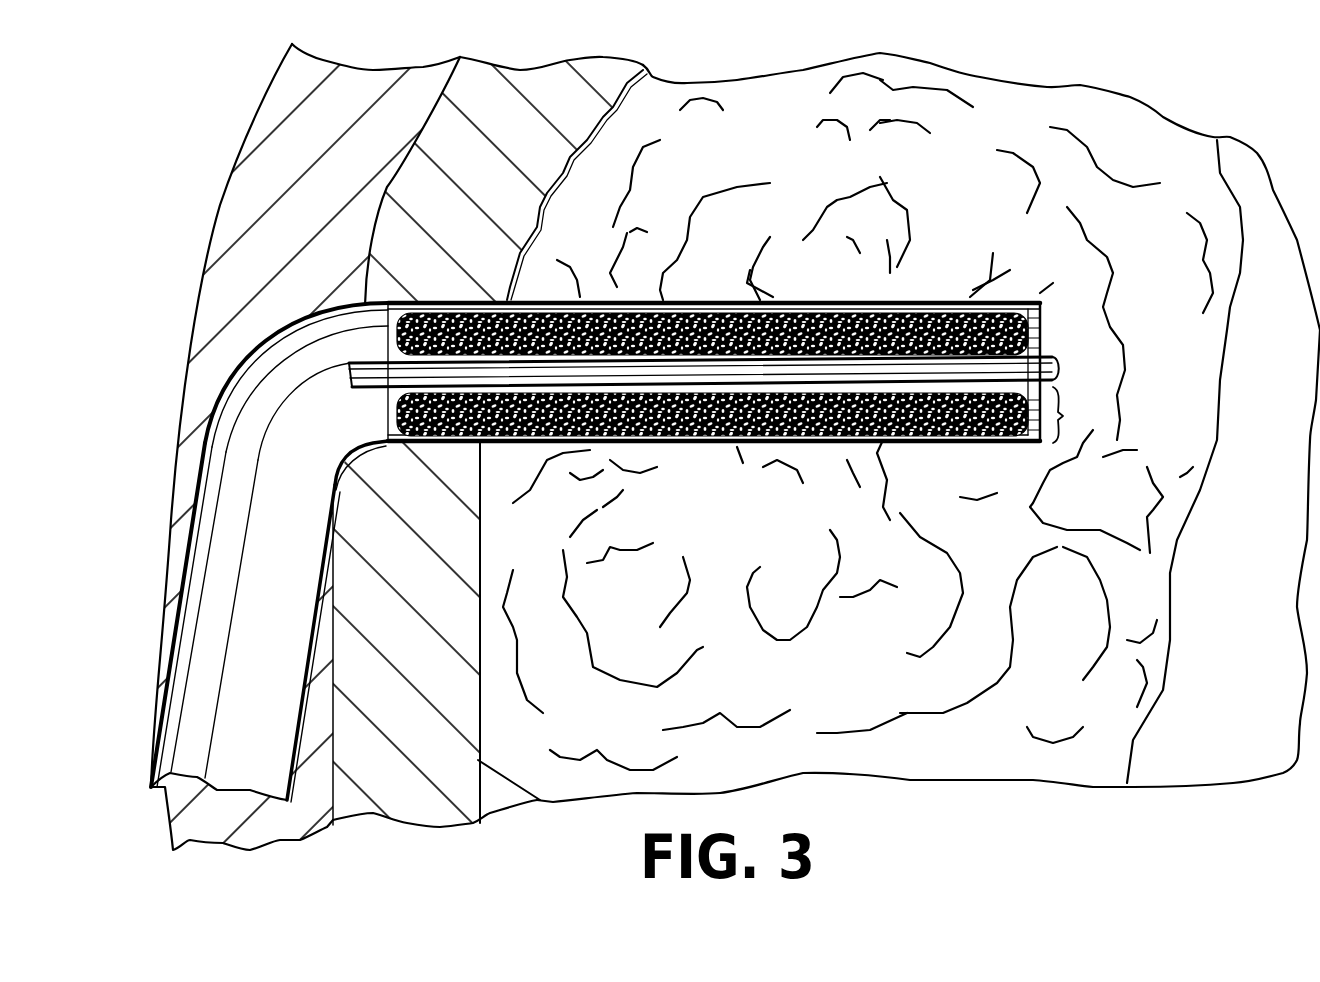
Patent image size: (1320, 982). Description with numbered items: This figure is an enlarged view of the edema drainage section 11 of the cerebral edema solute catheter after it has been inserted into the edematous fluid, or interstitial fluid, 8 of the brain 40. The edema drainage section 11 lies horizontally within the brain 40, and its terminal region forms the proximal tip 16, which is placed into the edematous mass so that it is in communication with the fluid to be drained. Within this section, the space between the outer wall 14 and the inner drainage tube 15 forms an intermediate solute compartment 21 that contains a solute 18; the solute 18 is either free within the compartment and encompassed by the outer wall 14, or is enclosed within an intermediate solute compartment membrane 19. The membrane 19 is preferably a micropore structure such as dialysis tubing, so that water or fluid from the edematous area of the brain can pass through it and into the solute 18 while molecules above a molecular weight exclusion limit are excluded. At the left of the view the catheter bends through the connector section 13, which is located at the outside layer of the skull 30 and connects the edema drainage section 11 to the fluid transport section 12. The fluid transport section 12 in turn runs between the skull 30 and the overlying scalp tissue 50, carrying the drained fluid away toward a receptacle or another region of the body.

The edematous fluid 8 is at (1152, 157).
The edema drainage section 11 is at (690, 452).
The fluid transport section 12 is at (300, 733).
The connector section 13 is at (268, 341).
The outer wall 14 is at (913, 446).
The inner drainage tube 15 is at (373, 386).
The proximal tip 16 is at (1078, 328).
The solute 18 is at (476, 311).
The intermediate solute compartment membrane 19 is at (386, 331).
The intermediate solute compartment 21 is at (1075, 415).
The skull 30 is at (530, 157).
The brain 40 is at (755, 157).
The scalp tissue 50 is at (337, 157).